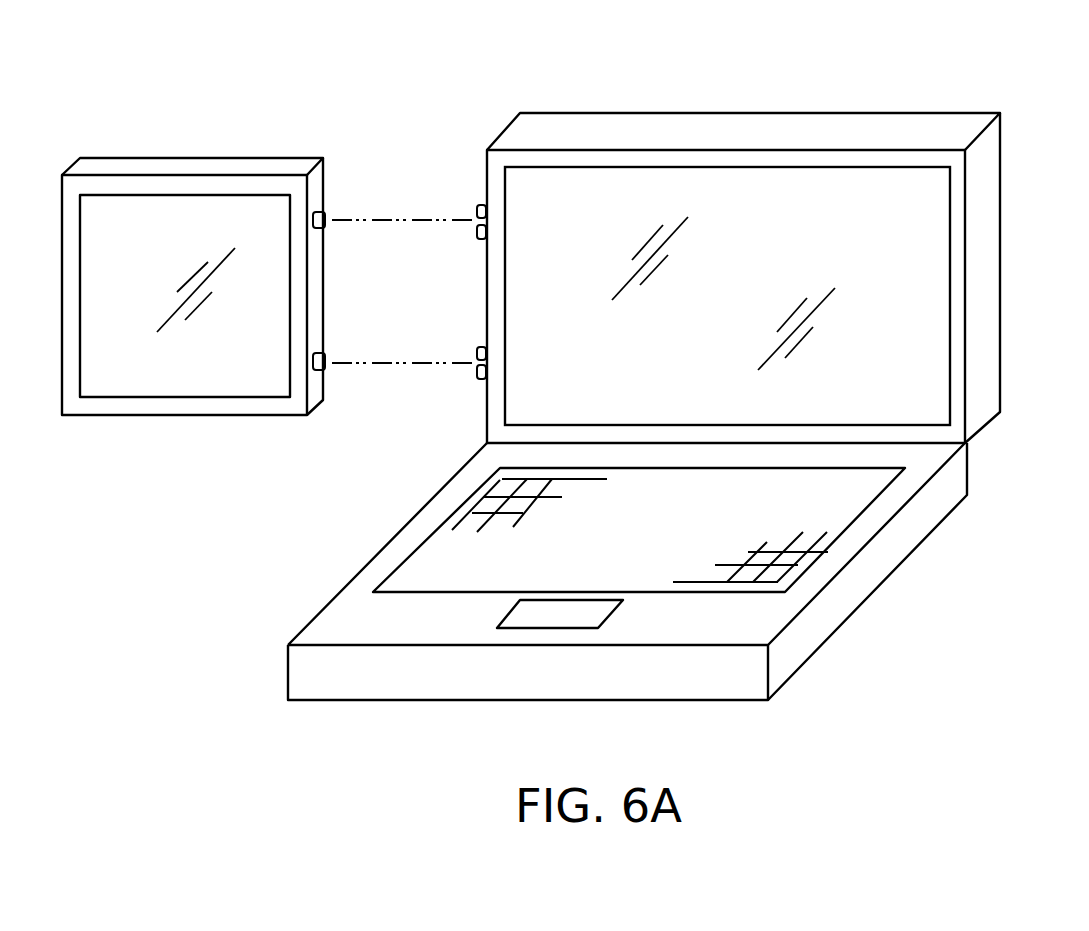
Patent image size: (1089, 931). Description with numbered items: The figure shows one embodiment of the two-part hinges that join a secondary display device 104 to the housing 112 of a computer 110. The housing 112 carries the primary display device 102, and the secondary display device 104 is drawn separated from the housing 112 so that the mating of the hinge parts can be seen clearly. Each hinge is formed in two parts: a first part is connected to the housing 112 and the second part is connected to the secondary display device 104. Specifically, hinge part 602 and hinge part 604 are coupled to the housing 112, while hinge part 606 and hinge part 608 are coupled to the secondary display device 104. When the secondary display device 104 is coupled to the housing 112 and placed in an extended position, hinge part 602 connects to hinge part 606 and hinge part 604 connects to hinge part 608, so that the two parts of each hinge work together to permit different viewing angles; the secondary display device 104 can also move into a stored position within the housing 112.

The primary display device 102 is at (908, 395).
The secondary display device 104 is at (160, 380).
The computer 110 is at (888, 545).
The housing 112 is at (833, 132).
The hinge part 602 is at (473, 373).
The hinge part 604 is at (475, 210).
The hinge part 606 is at (327, 370).
The hinge part 608 is at (327, 212).